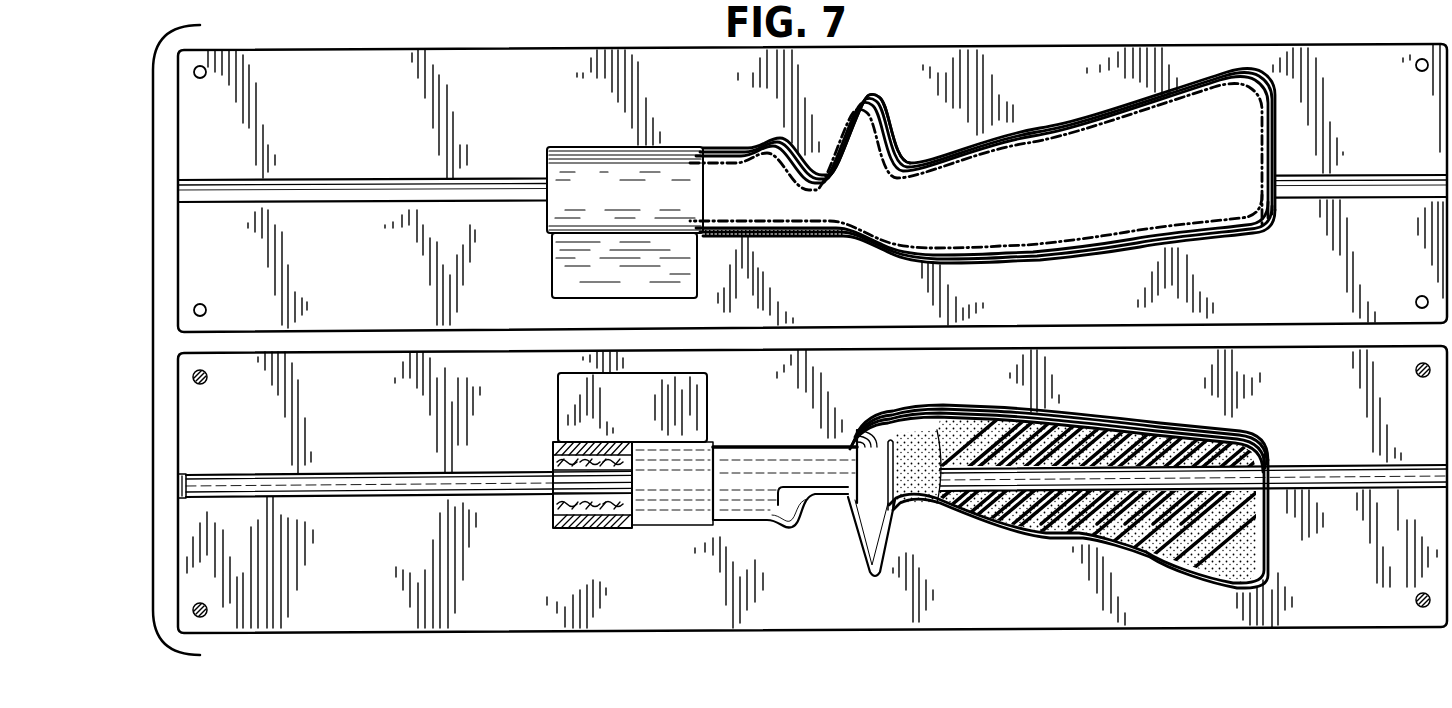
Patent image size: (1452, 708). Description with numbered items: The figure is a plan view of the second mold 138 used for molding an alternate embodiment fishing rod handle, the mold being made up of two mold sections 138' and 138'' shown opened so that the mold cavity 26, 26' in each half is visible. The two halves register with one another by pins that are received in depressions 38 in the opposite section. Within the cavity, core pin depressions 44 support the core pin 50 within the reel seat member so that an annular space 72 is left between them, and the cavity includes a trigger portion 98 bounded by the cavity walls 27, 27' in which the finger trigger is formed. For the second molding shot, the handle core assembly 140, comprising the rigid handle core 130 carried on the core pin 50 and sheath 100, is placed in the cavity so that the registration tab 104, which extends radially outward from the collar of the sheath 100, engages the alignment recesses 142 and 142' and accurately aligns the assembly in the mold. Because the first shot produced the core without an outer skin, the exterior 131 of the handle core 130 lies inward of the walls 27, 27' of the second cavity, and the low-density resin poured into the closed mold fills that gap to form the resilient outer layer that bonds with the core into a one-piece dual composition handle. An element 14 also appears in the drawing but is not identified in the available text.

The spear gun 14 is at (332, 6).
The mold cavity 26 is at (982, 147).
The wall of mold cavity 27 is at (982, 240).
The mold cavity 26' is at (1060, 419).
The wall of mold cavity 27' is at (1058, 421).
The depression 38 is at (207, 376).
The core pin depression 44 is at (180, 478).
The core pin 50 is at (380, 473).
The annular space 72 is at (553, 469).
The trigger portion 98 is at (880, 97).
The sheath 100 is at (600, 530).
The registration tab 104 is at (652, 422).
The handle core 130 is at (1242, 433).
The exterior of handle core 131 is at (1165, 437).
The second mold 138 is at (166, 340).
The mold section 138' is at (812, 168).
The mold section 138'' is at (812, 512).
The handle core assembly 140 is at (1027, 538).
The alignment recess 142 is at (595, 222).
The alignment recess 142' is at (602, 407).